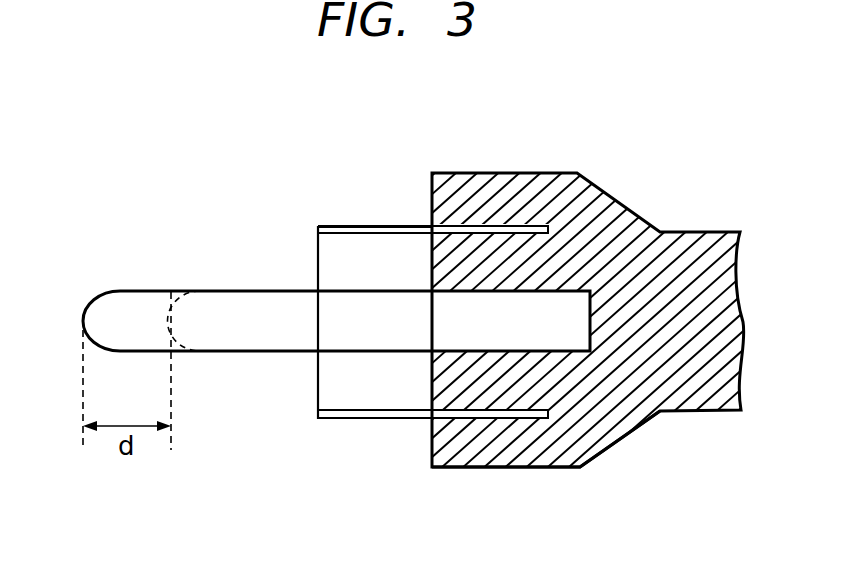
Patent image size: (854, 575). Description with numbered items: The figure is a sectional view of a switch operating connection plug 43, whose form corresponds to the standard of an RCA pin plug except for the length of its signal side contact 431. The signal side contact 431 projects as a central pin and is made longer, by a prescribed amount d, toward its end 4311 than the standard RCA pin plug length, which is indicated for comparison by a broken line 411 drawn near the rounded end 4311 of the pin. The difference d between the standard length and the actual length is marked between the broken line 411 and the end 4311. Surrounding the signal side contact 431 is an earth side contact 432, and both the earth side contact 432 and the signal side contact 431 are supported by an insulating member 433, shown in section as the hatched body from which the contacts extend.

The switch operating connection plug 43 is at (500, 183).
The signal side contact 431 is at (247, 290).
The end 4311 is at (100, 296).
The broken line 411 is at (173, 300).
The earth side contact 432 is at (350, 415).
The insulating member 433 is at (518, 462).